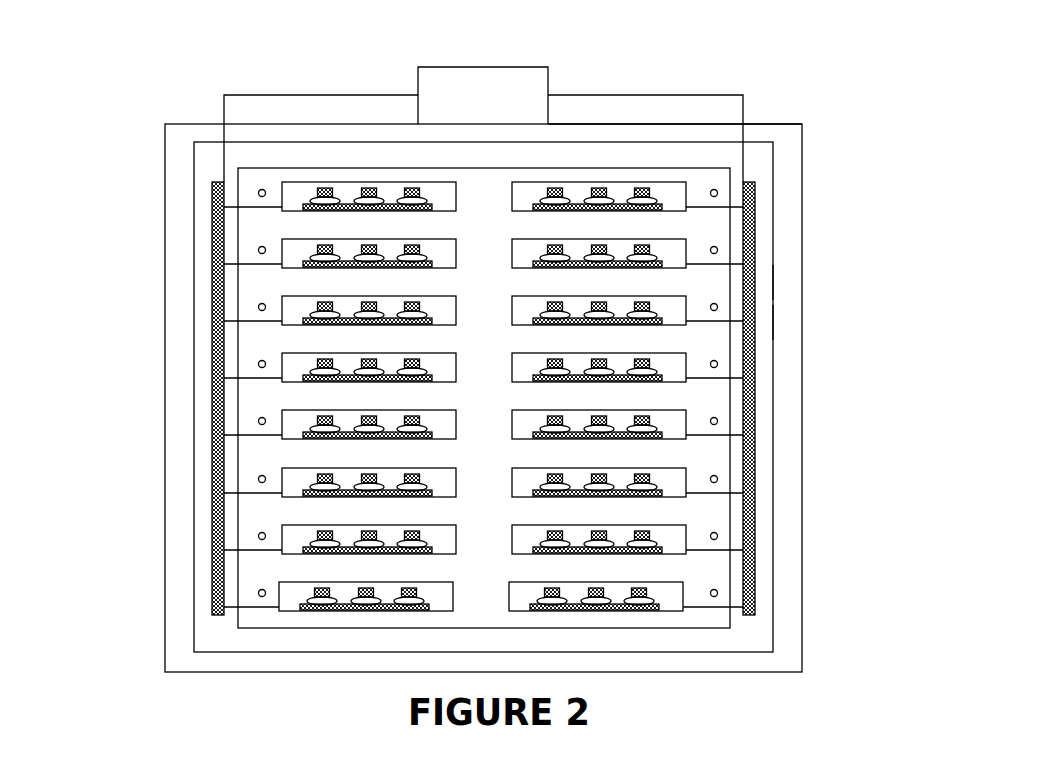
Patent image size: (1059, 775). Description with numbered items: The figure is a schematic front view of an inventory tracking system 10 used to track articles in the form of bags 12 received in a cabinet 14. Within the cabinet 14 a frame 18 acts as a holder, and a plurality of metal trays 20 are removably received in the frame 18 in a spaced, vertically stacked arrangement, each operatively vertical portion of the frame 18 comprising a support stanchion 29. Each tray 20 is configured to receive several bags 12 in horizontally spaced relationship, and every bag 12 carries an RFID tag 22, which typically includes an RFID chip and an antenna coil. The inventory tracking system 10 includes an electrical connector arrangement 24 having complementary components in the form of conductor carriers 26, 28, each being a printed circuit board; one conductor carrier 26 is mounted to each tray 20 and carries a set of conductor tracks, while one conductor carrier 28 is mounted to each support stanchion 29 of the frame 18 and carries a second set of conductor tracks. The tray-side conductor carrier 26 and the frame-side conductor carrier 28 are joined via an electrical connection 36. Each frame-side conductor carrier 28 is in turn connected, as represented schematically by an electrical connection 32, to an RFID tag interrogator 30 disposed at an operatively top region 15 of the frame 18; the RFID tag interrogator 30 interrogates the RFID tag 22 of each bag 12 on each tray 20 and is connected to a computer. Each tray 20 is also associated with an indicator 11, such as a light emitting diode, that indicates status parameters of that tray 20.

The inventory tracking system 10 is at (145, 104).
The indicator 11 is at (718, 183).
The bag 12 is at (320, 543).
The cabinet 14 is at (162, 164).
The operatively top region 15 is at (773, 125).
The frame 18 is at (760, 285).
The tray 20 is at (292, 255).
The RFID tag 22 is at (653, 422).
The electrical connector arrangement 24 is at (195, 227).
The conductor carrier 26 is at (308, 497).
The conductor carrier 28 is at (215, 355).
The support stanchion 29 is at (760, 320).
The RFID tag interrogator 30 is at (528, 93).
The electrical connection 32 is at (338, 93).
The electrical connection 36 is at (260, 322).